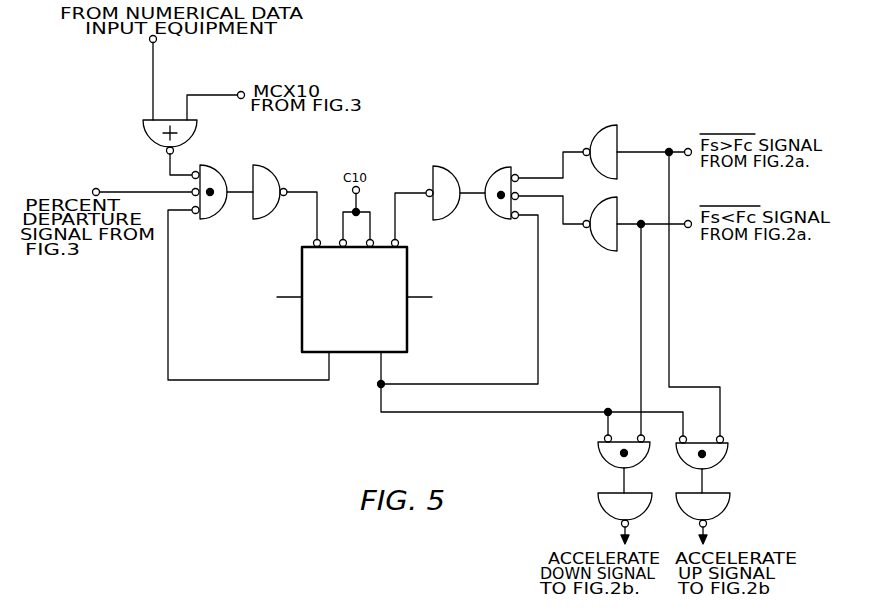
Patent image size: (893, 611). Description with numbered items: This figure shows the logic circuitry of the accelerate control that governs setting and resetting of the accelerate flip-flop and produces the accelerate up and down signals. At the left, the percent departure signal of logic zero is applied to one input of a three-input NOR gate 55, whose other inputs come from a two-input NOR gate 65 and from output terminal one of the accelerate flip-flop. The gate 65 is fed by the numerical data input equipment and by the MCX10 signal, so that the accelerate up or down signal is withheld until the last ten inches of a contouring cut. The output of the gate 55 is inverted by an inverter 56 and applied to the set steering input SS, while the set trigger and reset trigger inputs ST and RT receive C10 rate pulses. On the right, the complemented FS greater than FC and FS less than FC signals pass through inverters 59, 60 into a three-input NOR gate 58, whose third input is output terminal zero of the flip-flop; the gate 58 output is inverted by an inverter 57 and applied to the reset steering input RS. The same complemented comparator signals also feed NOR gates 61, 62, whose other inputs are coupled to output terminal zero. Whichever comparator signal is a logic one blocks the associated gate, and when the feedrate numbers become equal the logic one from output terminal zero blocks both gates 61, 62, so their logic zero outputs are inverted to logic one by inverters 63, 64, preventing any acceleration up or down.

The three-input NOR gate 55 is at (224, 177).
The inverter 56 is at (280, 175).
The inverter 57 is at (432, 179).
The three-input NOR gate 58 is at (516, 159).
The inverter 59 is at (621, 134).
The inverter 60 is at (620, 198).
The NOR gate 61 is at (590, 446).
The NOR gate 62 is at (733, 448).
The inverter 63 is at (593, 500).
The inverter 64 is at (735, 503).
The two-input NOR gate 65 is at (197, 137).